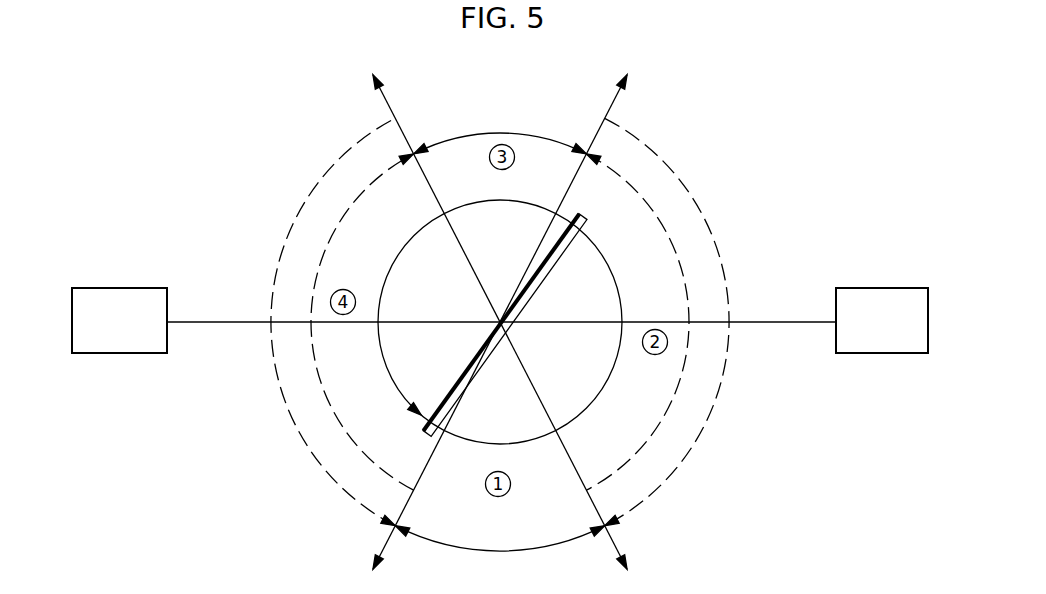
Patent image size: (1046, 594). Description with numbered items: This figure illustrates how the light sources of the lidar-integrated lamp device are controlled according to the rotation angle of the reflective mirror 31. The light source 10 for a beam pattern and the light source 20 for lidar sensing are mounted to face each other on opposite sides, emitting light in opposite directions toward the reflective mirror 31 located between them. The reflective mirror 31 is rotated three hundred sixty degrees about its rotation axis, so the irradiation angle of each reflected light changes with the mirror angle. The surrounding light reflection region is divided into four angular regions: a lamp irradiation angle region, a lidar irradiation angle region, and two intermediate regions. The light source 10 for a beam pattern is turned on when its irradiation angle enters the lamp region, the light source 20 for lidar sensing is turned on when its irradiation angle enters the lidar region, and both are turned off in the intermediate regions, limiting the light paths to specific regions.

The light source for a beam pattern 10 is at (117, 353).
The light source for lidar sensing 20 is at (883, 353).
The reflective mirror 31 is at (576, 212).